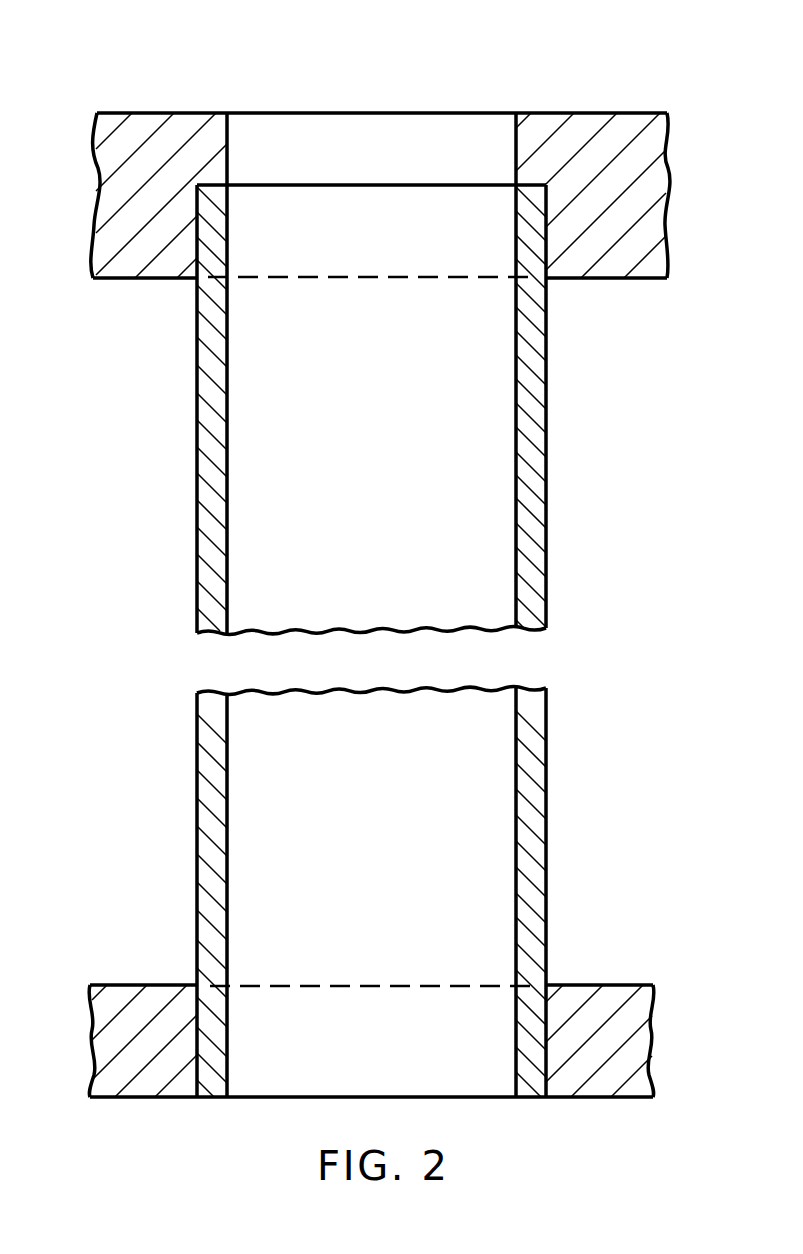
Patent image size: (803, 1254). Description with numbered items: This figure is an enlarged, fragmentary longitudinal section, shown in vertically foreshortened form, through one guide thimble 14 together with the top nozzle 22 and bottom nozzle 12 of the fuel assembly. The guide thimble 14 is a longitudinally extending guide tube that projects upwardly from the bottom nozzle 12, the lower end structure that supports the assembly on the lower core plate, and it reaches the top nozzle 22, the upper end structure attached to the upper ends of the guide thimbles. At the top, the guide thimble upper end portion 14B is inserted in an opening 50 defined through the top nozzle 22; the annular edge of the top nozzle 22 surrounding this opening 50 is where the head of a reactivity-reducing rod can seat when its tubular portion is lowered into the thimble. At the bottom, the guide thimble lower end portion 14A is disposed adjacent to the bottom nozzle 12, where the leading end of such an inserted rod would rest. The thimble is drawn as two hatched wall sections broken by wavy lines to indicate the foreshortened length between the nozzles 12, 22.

The bottom nozzle 12 is at (140, 985).
The top nozzle 22 is at (620, 113).
The guide thimble 14 is at (546, 435).
The guide thimble lower end portion 14A is at (546, 972).
The guide thimble upper end portion 14B is at (197, 322).
The opening 50 is at (515, 235).